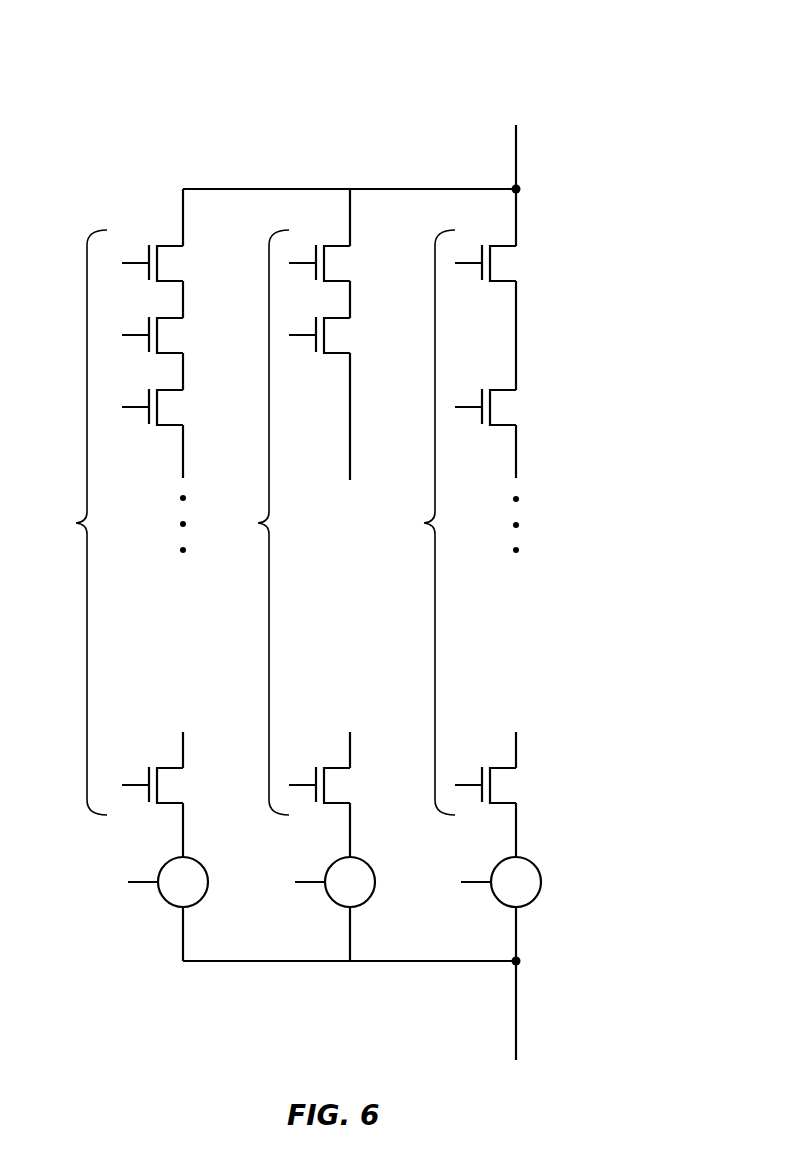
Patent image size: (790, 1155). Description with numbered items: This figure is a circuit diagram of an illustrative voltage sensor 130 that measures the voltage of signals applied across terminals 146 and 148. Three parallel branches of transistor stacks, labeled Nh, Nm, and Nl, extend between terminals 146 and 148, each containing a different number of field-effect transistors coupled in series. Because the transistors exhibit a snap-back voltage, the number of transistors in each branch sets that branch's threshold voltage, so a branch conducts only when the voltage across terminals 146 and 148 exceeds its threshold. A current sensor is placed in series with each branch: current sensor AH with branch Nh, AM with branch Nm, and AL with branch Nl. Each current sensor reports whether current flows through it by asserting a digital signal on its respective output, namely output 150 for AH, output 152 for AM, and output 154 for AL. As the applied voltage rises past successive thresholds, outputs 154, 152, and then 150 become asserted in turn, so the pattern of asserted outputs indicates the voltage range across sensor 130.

The voltage sensor 130 is at (654, 63).
The terminal 146 is at (518, 157).
The terminal 148 is at (518, 1015).
The output 150 is at (157, 890).
The output 152 is at (324, 890).
The output 154 is at (490, 890).